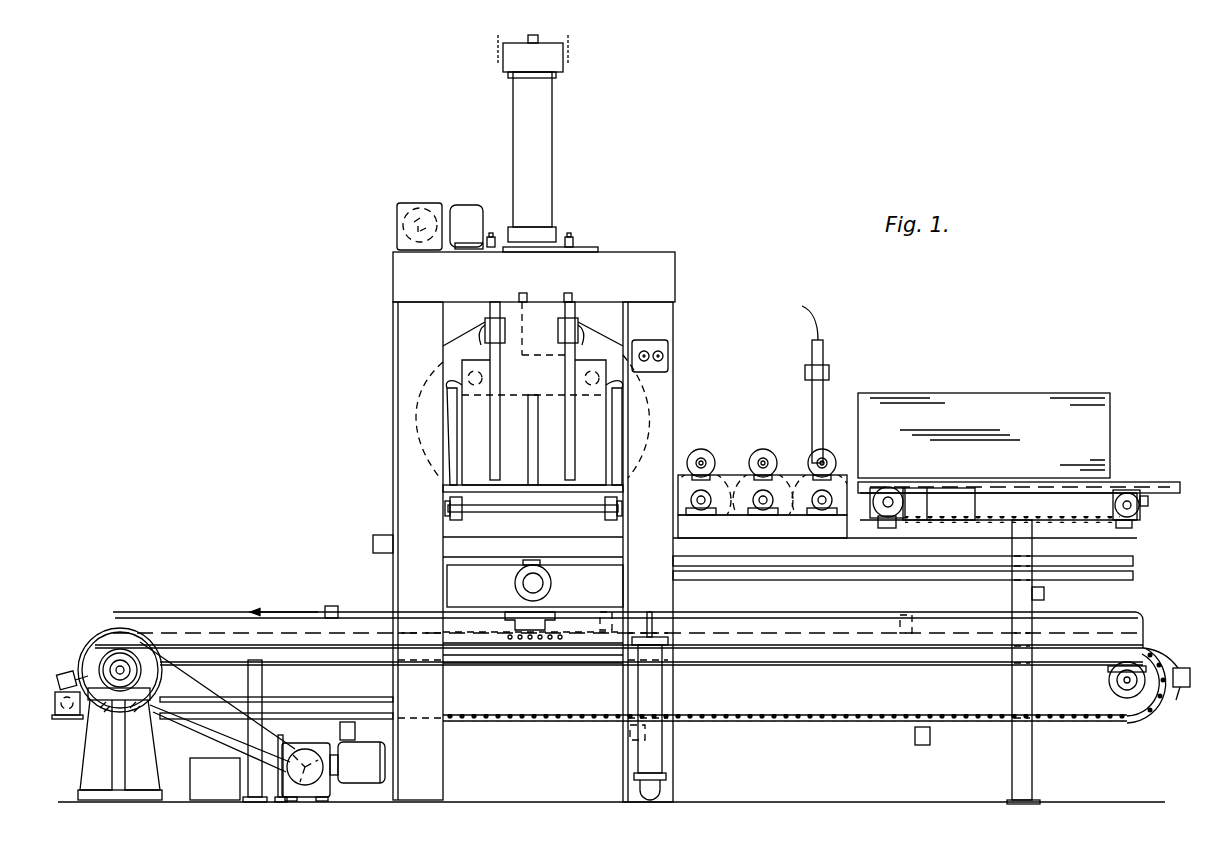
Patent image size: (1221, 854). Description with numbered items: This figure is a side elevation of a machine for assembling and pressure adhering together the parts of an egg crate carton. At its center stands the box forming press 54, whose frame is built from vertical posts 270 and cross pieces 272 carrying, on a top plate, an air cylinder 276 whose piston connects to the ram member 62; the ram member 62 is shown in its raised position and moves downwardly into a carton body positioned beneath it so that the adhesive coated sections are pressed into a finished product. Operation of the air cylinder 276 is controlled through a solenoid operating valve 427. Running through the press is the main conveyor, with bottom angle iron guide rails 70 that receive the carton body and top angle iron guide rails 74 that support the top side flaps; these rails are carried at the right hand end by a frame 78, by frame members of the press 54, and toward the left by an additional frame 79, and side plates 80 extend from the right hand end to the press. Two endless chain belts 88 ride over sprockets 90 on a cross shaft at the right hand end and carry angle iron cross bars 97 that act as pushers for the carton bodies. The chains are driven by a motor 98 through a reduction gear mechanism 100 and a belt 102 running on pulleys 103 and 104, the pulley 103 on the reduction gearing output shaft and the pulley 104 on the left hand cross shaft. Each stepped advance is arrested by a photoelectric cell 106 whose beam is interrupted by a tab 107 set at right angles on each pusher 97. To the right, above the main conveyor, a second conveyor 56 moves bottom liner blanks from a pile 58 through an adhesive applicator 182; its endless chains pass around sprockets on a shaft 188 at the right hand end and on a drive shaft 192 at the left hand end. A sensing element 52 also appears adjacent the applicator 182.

The solenoid operating valve 427 is at (503, 70).
The air cylinder 276 is at (513, 155).
The cross pieces 272 is at (393, 272).
The press 54 is at (505, 502).
The vertical posts 270 is at (393, 458).
The ram member 62 is at (610, 412).
The adhesive applicator 182 is at (733, 470).
The sensor 52 is at (826, 362).
The pile of bottom liner blanks 58 is at (1018, 386).
The drive shaft 192 is at (888, 498).
The shaft 188 is at (1128, 498).
The second conveyor 56 is at (1025, 489).
The top angle iron guide rail 74 is at (840, 581).
The frame 78 is at (1012, 680).
The side plates 80 is at (645, 663).
The bottom angle iron guide rail 70 is at (800, 665).
The endless chain belts 88 is at (808, 725).
The sprockets 90 is at (1127, 708).
The angle iron cross bars 97 is at (1180, 668).
The tab 107 is at (65, 672).
The pulley 104 is at (110, 660).
The photoelectric cell 106 is at (55, 708).
The belt 102 is at (210, 676).
The additional frame 79 is at (253, 802).
The reduction gear mechanism 100 is at (309, 741).
The pulley 103 is at (315, 753).
The motor 98 is at (378, 772).